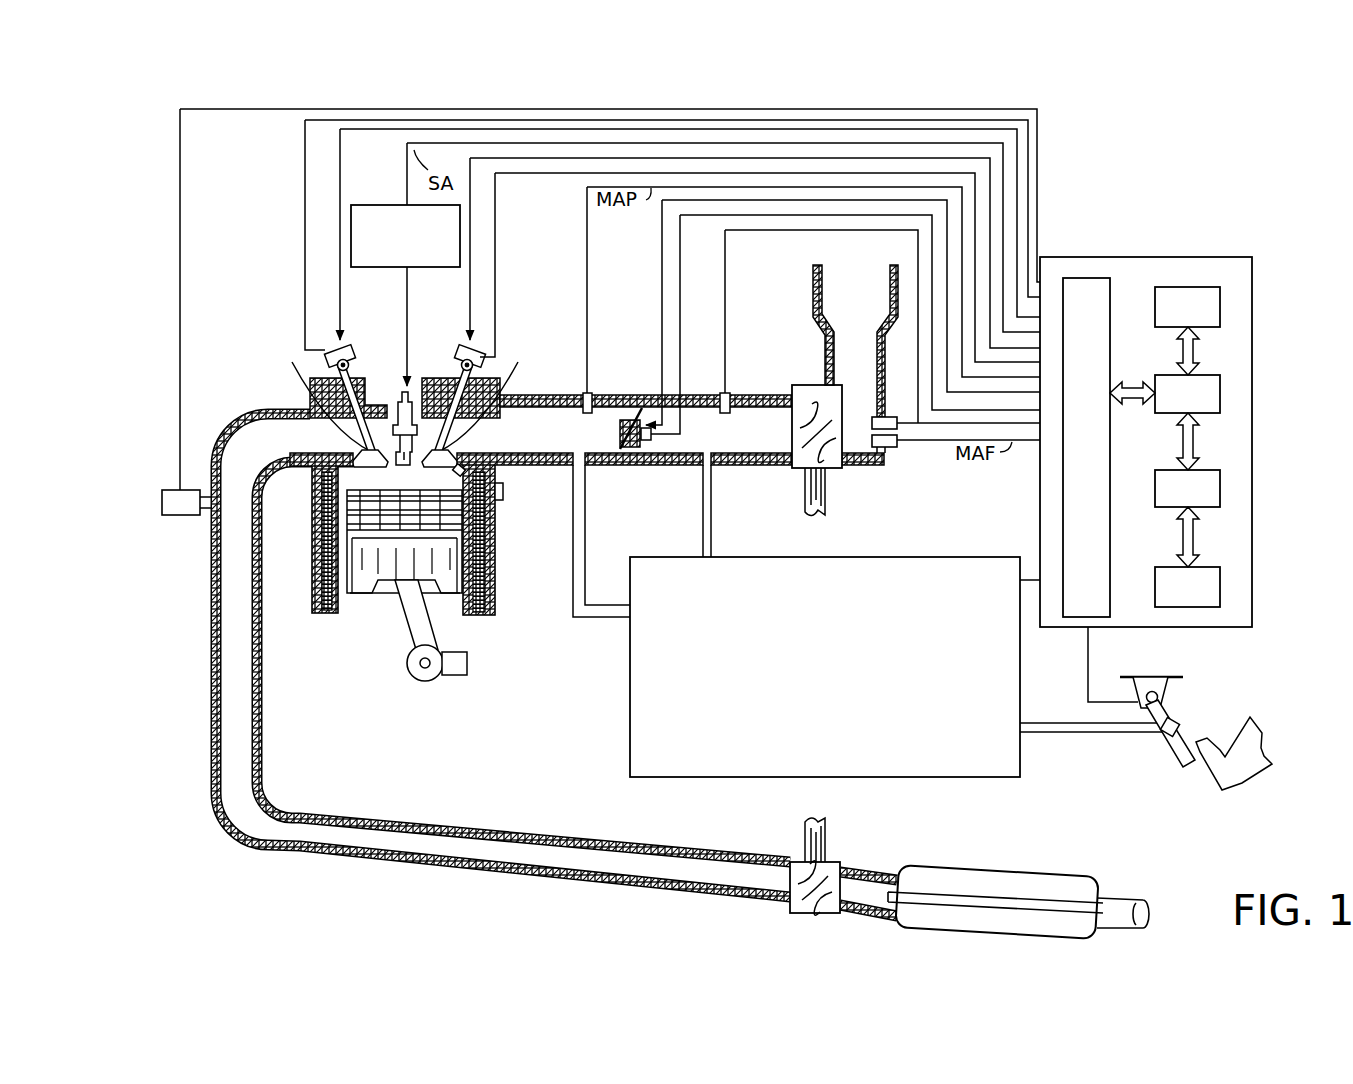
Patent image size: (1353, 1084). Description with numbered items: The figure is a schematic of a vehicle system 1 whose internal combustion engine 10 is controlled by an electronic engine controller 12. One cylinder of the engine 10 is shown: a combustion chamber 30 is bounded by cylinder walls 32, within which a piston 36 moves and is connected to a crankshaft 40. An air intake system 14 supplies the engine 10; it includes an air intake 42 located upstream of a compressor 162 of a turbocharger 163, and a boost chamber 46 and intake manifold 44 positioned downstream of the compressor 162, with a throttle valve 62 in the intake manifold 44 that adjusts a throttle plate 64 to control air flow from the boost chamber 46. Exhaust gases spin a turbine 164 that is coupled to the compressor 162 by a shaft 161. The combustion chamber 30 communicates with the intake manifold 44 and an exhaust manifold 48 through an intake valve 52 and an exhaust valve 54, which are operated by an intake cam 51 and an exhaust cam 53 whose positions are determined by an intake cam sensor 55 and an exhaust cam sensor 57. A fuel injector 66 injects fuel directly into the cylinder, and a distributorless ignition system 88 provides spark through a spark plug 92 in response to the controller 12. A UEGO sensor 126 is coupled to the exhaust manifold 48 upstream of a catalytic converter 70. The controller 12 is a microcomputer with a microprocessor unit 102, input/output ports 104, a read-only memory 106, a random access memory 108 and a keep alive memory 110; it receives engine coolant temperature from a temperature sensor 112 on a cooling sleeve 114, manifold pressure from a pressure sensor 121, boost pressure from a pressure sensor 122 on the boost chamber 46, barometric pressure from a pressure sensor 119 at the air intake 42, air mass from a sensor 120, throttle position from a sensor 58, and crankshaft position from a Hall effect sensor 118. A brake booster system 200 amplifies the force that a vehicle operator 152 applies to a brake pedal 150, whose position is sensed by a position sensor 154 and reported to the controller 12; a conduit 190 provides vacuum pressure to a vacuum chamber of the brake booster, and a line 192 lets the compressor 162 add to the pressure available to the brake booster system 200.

The vehicle system 1 is at (150, 162).
The internal combustion engine 10 is at (250, 335).
The electronic engine controller 12 is at (1189, 427).
The air intake system 14 is at (782, 342).
The combustion chamber 30 is at (403, 474).
The cylinder walls 32 is at (348, 600).
The piston 36 is at (392, 565).
The crankshaft 40 is at (415, 682).
The air intake 42 is at (867, 309).
The intake manifold 44 is at (590, 441).
The boost chamber 46 is at (752, 441).
The exhaust manifold 48 is at (290, 448).
The intake cam 51 is at (462, 347).
The intake valve 52 is at (446, 448).
The exhaust cam 53 is at (347, 347).
The exhaust valve 54 is at (312, 402).
The intake cam sensor 55 is at (478, 358).
The exhaust cam sensor 57 is at (333, 362).
The throttle position sensor 58 is at (646, 440).
The throttle valve 62 is at (624, 418).
The throttle plate 64 is at (641, 406).
The fuel injector 66 is at (470, 472).
The catalytic converter 70 is at (897, 924).
The distributorless ignition system 88 is at (362, 205).
The spark plug 92 is at (408, 378).
The microprocessor unit 102 is at (1222, 392).
The input/output ports 104 is at (1110, 285).
The read-only memory 106 is at (1222, 300).
The random access memory 108 is at (1222, 488).
The keep alive memory 110 is at (1222, 586).
The temperature sensor 112 is at (500, 500).
The cooling sleeve 114 is at (482, 614).
The Hall effect sensor 118 is at (450, 678).
The pressure sensor 119 is at (897, 418).
The air mass sensor 120 is at (897, 447).
The pressure sensor 121 is at (584, 392).
The pressure sensor 122 is at (748, 384).
The Universal Exhaust Gas Oxygen sensor 126 is at (162, 492).
The brake pedal 150 is at (1188, 765).
The vehicle operator 152 is at (1245, 720).
The position sensor 154 is at (1135, 700).
The shaft 161 is at (826, 855).
The compressor 162 is at (806, 385).
The turbocharger 163 is at (850, 476).
The turbine 164 is at (792, 862).
The conduit 190 is at (585, 505).
The line 192 is at (703, 520).
The brake booster system 200 is at (899, 667).